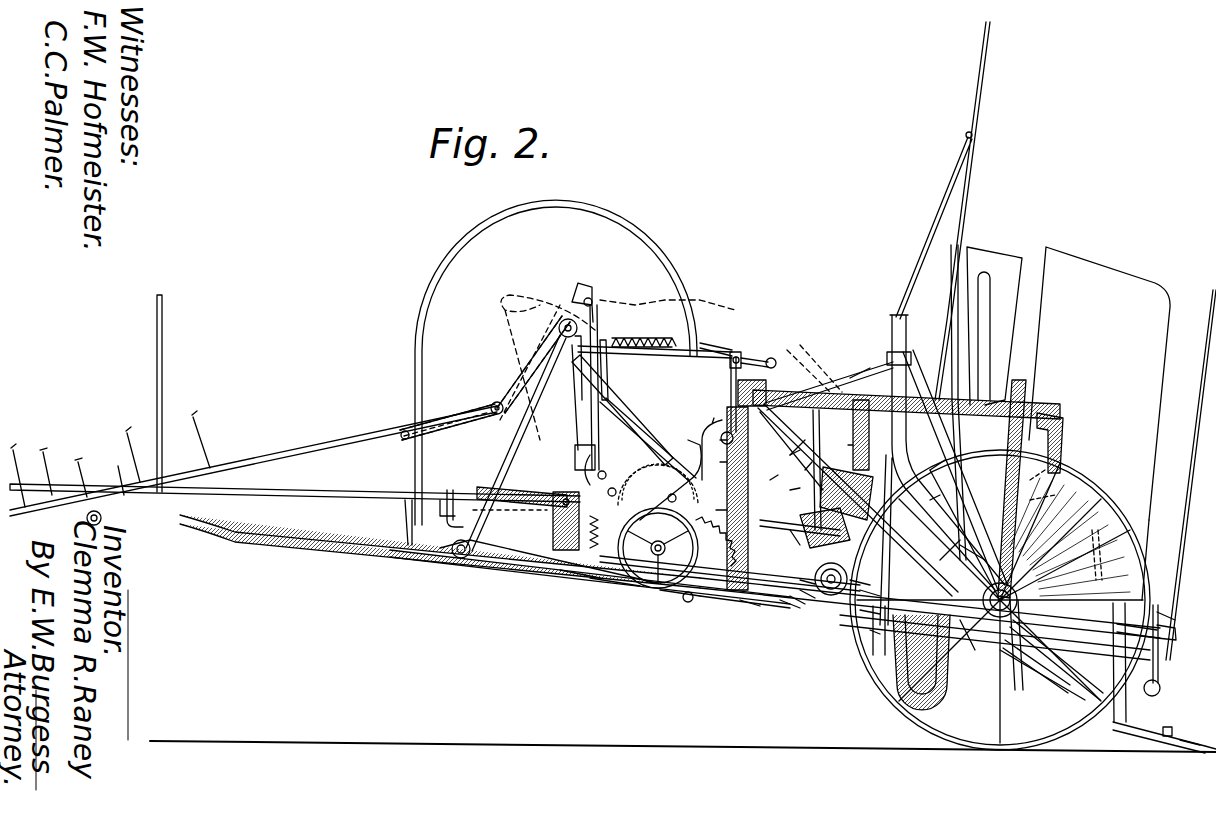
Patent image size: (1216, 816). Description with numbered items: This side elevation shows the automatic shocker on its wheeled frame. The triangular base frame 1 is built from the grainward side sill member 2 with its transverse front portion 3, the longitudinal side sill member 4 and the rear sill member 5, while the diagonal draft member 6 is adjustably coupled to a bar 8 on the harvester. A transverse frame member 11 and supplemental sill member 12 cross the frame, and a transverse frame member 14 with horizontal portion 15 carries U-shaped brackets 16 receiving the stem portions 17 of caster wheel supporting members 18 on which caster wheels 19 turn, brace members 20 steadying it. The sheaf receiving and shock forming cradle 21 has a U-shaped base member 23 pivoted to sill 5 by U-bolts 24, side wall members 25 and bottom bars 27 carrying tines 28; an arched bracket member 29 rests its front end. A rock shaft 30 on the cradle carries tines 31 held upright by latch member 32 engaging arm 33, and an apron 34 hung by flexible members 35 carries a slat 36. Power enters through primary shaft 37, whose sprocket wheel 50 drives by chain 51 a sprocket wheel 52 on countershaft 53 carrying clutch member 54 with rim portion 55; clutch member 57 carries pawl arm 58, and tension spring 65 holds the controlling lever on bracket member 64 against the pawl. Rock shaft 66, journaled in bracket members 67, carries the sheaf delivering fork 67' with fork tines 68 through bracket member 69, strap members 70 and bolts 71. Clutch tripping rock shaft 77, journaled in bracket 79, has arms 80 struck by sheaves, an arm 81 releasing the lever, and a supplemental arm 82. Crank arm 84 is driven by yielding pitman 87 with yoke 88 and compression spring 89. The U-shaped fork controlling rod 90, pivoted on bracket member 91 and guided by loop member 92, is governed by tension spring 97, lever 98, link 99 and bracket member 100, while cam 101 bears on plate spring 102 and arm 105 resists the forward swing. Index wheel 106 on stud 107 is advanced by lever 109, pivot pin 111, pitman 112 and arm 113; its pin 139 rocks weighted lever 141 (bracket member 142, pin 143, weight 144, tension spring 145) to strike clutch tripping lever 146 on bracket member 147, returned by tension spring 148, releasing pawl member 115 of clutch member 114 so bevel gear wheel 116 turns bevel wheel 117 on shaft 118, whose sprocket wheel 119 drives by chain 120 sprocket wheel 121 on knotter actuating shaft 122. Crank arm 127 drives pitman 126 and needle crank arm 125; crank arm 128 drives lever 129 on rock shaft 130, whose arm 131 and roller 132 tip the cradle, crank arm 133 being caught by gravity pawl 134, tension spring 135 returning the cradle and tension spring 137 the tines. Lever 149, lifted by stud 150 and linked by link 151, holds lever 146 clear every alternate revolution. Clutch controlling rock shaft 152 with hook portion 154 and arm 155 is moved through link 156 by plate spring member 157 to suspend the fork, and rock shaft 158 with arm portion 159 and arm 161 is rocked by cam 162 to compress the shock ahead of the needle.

The base portion of the wheeled frame 1 is at (350, 552).
The side sill member 2 is at (466, 560).
The front portion 3 is at (453, 556).
The longitudinally arranged side sill member 4 is at (520, 570).
The transverse rear sill member 5 is at (1160, 650).
The draft member 6 is at (275, 535).
The bar 8 is at (101, 519).
The wheeled frame member 11 is at (1012, 560).
The supplemental transverse sill member 12 is at (790, 432).
The transversely arranged frame member 14 is at (870, 630).
The horizontal portion 15 is at (875, 645).
The U-shaped brackets 16 is at (950, 335).
The vertical stem portions 17 is at (891, 322).
The caster wheel supporting members 18 is at (978, 650).
The caster wheels 19 is at (885, 690).
The brace members 20 is at (845, 375).
The sheaf receiving and shock forming cradle 21 is at (1147, 545).
The U-shaped base member 23 is at (941, 549).
The U-bolts 24 is at (1085, 685).
The side wall members 25 is at (1125, 280).
The bars 27 is at (1090, 555).
The tines 28 is at (935, 512).
The arched bracket member 29 is at (805, 592).
The rock shaft 30 is at (1162, 684).
The tines 31 is at (1186, 492).
The latch member 32 is at (1170, 612).
The arm 33 is at (1165, 636).
The apron 34 is at (1162, 727).
The short flexible members 35 is at (1112, 726).
The slat 36 is at (1172, 734).
The primary power transmitting shaft 37 is at (850, 600).
The sprocket wheel 50 is at (862, 612).
The chain 51 is at (718, 606).
The sprocket wheel 52 is at (620, 588).
The countershaft 53 is at (590, 582).
The constantly rotating clutch member 54 is at (645, 590).
The rim portion 55 is at (672, 597).
The clutch member 57 is at (688, 603).
The pawl arm 58 is at (727, 470).
The bracket member 64 is at (561, 521).
The tension spring 65 is at (545, 588).
The transverse rock shaft 66 is at (562, 320).
The bracket members 67 is at (599, 443).
The sheaf delivering fork 67' is at (253, 461).
The fork tines 68 is at (20, 455).
The bracket member 69 is at (594, 366).
The strap members 70 is at (520, 382).
The bolts 71 is at (626, 373).
The clutch tripping rock shaft 77 is at (350, 490).
The bracket 79 is at (450, 488).
The vertically arranged arms 80 is at (156, 343).
The arm 81 is at (495, 490).
The supplemental arm 82 is at (439, 510).
The crank arm 84 is at (580, 390).
The longitudinally yielding pitman 87 is at (580, 440).
The yoke 88 is at (592, 428).
The compression spring 89 is at (612, 462).
The U-shaped fork controlling rod 90 is at (416, 340).
The bracket member 91 is at (405, 530).
The loop member 92 is at (432, 428).
The tension spring 97 is at (644, 332).
The lever 98 is at (735, 352).
The link 99 is at (772, 369).
The bracket member 100 is at (742, 352).
The cam 101 is at (588, 283).
The plate spring 102 is at (498, 415).
The arm 105 is at (88, 468).
The index wheel 106 is at (670, 474).
The stud 107 is at (655, 508).
The lever 109 is at (607, 490).
The pivot pin 111 is at (579, 470).
The pitman 112 is at (585, 380).
The arm 113 is at (596, 310).
The constantly rotating clutch member 114 is at (818, 594).
The pawl member 115 is at (825, 528).
The bevel gear wheel 116 is at (805, 604).
The bevel wheel 117 is at (903, 631).
The shaft 118 is at (968, 540).
The sprocket wheel 119 is at (995, 636).
The chain 120 is at (935, 487).
The sprocket wheel 121 is at (950, 345).
The knotter actuating shaft 122 is at (805, 470).
The crank arm 125 is at (728, 413).
The pitman 126 is at (737, 392).
The crank arm 127 is at (729, 383).
The crank arm 128 is at (1063, 455).
The lever 129 is at (1042, 682).
The rock shaft 130 is at (1016, 645).
The forwardly turned arm 131 is at (980, 660).
The roller 132 is at (846, 484).
The crank arm 133 is at (1036, 669).
The gravity pawl 134 is at (1110, 660).
The tension spring 135 is at (925, 693).
The tension spring 137 is at (1175, 628).
The laterally projecting pin 139 is at (680, 490).
The lever 141 is at (773, 473).
The bracket member 142 is at (791, 525).
The pin 143 is at (798, 518).
The weight 144 is at (780, 487).
The tension spring 145 is at (781, 458).
The clutch tripping lever 146 is at (770, 615).
The bracket member 147 is at (790, 612).
The tension spring 148 is at (800, 612).
The lever 149 is at (806, 368).
The stud 150 is at (853, 430).
The link connection 151 is at (797, 465).
The clutch controlling rock shaft 152 is at (752, 610).
The hook portion 154 is at (721, 451).
The laterally extending arm 155 is at (718, 484).
The link 156 is at (714, 422).
The plate spring member 157 is at (806, 402).
The longitudinally arranged rock shaft 158 is at (887, 358).
The arm portion 159 is at (966, 213).
The laterally extending arm 161 is at (853, 365).
The cam 162 is at (837, 437).